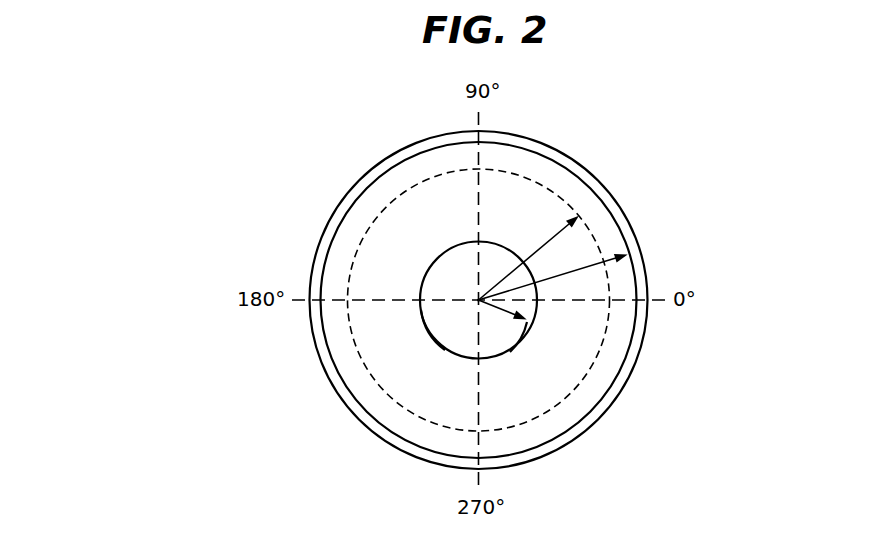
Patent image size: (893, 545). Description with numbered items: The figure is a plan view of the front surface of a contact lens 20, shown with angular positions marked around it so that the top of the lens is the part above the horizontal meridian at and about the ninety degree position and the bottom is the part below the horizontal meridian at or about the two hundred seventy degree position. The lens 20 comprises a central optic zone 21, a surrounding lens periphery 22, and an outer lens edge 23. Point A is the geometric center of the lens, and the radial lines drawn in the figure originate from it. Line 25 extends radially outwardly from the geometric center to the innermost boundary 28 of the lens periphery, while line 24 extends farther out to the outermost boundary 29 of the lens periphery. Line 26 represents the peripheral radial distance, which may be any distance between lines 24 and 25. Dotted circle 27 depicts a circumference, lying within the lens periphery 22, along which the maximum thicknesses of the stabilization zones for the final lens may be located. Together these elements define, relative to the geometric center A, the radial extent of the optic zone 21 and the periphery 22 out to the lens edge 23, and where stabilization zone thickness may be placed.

The contact lens 20 is at (628, 172).
The optic zone 21 is at (467, 330).
The lens periphery 22 is at (578, 338).
The lens edge 23 is at (637, 342).
The line 24 is at (582, 262).
The line 25 is at (508, 312).
The peripheral radial distance 26 is at (551, 238).
The dotted circle 27 is at (390, 202).
The innermost boundary 28 is at (430, 330).
The outermost boundary 29 is at (637, 279).
The geometric center A is at (478, 293).